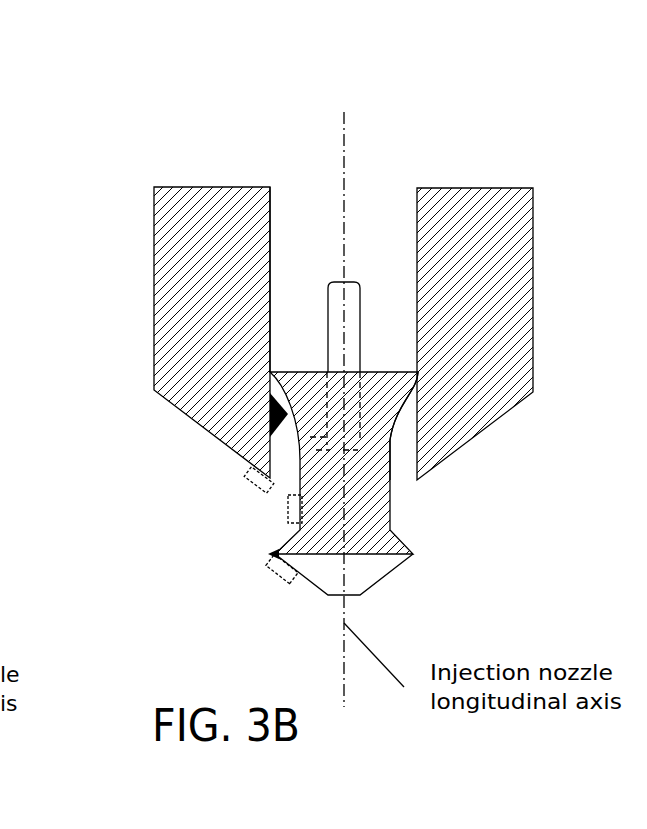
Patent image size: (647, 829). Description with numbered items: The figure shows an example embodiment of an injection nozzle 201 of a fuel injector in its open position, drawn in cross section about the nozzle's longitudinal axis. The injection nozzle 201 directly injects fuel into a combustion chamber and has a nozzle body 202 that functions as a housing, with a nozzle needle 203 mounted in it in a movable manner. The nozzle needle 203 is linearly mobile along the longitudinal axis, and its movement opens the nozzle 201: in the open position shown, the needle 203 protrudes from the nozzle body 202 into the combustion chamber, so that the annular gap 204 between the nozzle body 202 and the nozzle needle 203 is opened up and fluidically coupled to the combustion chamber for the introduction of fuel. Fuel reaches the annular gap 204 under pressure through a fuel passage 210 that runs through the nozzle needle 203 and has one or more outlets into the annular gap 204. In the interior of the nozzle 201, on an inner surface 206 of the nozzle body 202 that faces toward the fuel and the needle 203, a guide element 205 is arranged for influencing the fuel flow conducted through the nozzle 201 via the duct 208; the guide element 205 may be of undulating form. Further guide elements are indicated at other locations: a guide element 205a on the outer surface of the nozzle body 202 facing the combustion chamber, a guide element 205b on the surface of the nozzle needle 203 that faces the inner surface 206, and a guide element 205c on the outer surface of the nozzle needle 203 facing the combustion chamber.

The injection nozzle 201 is at (290, 103).
The nozzle body 202 is at (154, 300).
The nozzle needle 203 is at (377, 317).
The annular gap 204 is at (420, 483).
The guide element 205 is at (253, 435).
The guide element 205a is at (257, 485).
The guide element 205b is at (287, 507).
The guide element 205c is at (281, 577).
The inner surface 206 is at (270, 213).
The duct 208 is at (403, 403).
The fuel passage 210 is at (323, 367).